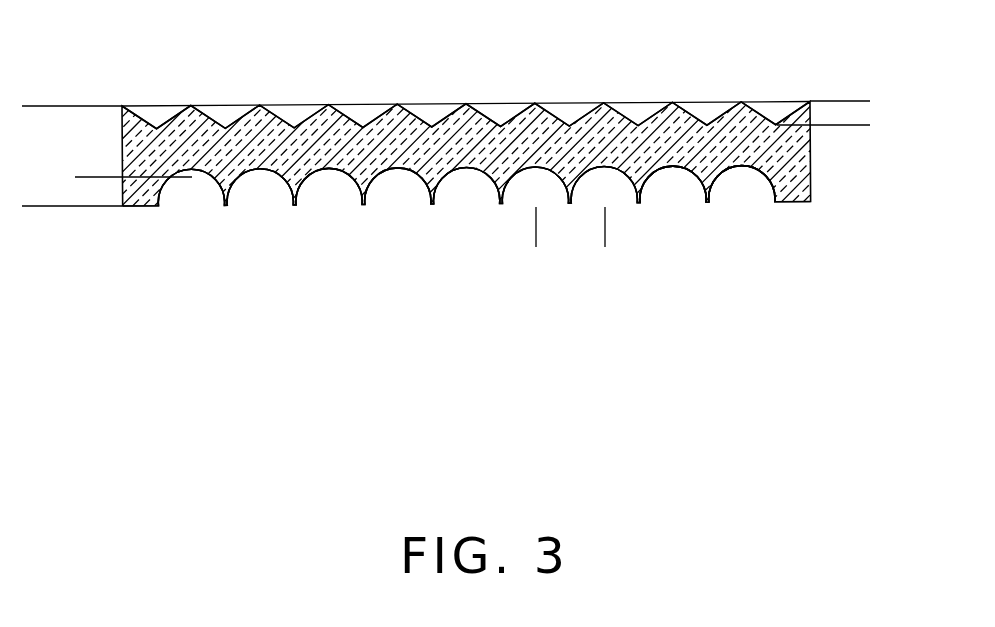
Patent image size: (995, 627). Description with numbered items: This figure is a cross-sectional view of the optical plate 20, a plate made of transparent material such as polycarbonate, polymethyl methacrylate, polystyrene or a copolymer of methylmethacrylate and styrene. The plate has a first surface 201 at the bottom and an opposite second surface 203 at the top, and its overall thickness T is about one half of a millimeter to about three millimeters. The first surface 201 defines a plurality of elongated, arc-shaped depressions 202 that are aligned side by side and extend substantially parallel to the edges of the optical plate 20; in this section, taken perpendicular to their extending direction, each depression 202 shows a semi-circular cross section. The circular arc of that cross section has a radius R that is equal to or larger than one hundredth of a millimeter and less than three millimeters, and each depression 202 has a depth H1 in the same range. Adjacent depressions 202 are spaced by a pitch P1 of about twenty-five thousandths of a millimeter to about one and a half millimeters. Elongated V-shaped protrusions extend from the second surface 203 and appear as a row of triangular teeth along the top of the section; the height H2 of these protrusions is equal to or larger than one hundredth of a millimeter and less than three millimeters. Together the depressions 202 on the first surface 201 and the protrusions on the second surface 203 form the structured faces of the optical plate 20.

The optical plate 20 is at (444, 74).
The first surface 201 is at (795, 208).
The elongated, arc-shaped depressions 202 is at (736, 190).
The second surface 203 is at (640, 96).
The radius R is at (659, 190).
The thickness T is at (27, 106).
The depth H1 is at (81, 137).
The height H2 is at (863, 62).
The pitch P1 is at (605, 240).